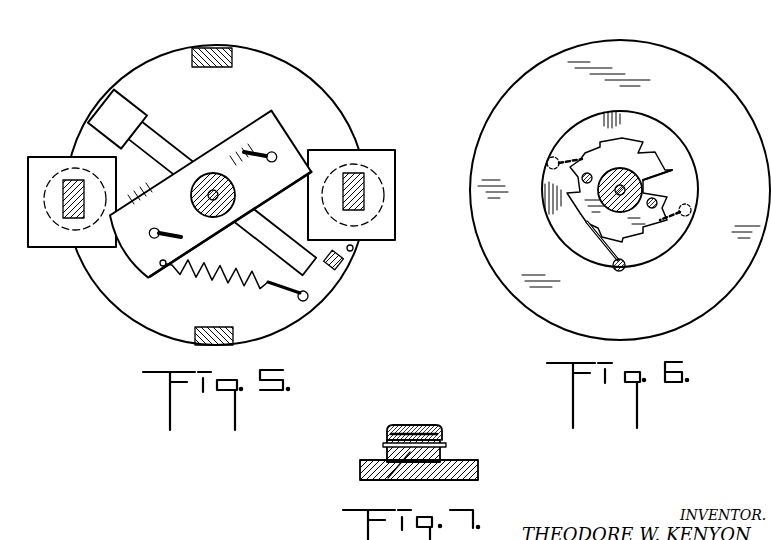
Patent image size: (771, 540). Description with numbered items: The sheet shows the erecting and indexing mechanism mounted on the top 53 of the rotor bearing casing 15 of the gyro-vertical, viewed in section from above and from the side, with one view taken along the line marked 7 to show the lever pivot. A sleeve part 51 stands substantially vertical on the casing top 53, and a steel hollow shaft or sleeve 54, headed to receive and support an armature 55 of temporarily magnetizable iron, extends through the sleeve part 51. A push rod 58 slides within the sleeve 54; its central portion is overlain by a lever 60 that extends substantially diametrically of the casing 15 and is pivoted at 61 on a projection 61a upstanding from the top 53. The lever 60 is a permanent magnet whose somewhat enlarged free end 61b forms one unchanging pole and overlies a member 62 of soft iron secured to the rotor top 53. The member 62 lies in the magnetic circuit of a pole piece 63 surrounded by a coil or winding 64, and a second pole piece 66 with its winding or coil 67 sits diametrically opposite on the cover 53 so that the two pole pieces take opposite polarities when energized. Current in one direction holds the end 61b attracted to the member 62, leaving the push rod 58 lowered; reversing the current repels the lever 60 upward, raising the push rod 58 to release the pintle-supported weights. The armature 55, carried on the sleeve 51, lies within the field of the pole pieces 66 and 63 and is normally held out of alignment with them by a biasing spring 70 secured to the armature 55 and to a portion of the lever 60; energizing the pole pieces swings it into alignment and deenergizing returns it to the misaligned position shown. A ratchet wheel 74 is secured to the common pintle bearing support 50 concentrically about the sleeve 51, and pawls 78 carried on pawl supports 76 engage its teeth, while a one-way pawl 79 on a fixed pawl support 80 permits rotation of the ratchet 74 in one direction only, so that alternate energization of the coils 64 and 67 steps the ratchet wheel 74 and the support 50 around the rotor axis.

In FIG. 5, the rotor bearing casing 15 is at (276, 76).
In FIG. 6, the common support 50 is at (652, 126).
In FIG. 5, the sleeve part 51 is at (226, 214).
In FIG. 6, the sleeve part 51 is at (670, 171).
In FIG. 5, the top of the rotor casing 53 is at (338, 116).
In FIG. 7, the top of the rotor casing 53 is at (476, 469).
In FIG. 5, the hollow shaft or sleeve 54 is at (224, 204).
In FIG. 6, the hollow shaft or sleeve 54 is at (643, 189).
In FIG. 5, the armature 55 is at (291, 130).
In FIG. 5, the push rod 58 is at (231, 188).
In FIG. 6, the push rod 58 is at (627, 205).
In FIG. 5, the lever 60 is at (170, 152).
In FIG. 7, the lever 60 is at (426, 427).
In FIG. 5, the pivot of the lever 61 is at (347, 266).
In FIG. 7, the pivot of the lever 61 is at (445, 443).
In FIG. 7, the projection 61a is at (388, 478).
In FIG. 5, the free end of the lever 61b is at (109, 105).
In FIG. 5, the member of soft iron 62 is at (78, 140).
In FIG. 5, the pole piece 63 is at (68, 240).
In FIG. 5, the coil or winding 64 is at (76, 249).
In FIG. 5, the second pole piece 66 is at (357, 177).
In FIG. 5, the winding or coil of the second pole piece 67 is at (396, 236).
In FIG. 5, the biasing spring 70 is at (240, 284).
In FIG. 6, the ratchet wheel 74 is at (638, 152).
In FIG. 5, the pawl supports 76 is at (276, 161).
In FIG. 6, the pawl supports 76 is at (548, 158).
In FIG. 5, the pawls 78 is at (259, 153).
In FIG. 6, the pawls 78 is at (571, 157).
In FIG. 6, the one-way pawl 79 is at (602, 256).
In FIG. 6, the fixed pawl support 80 is at (622, 271).
In FIG. 5, the pin 7 is at (351, 252).